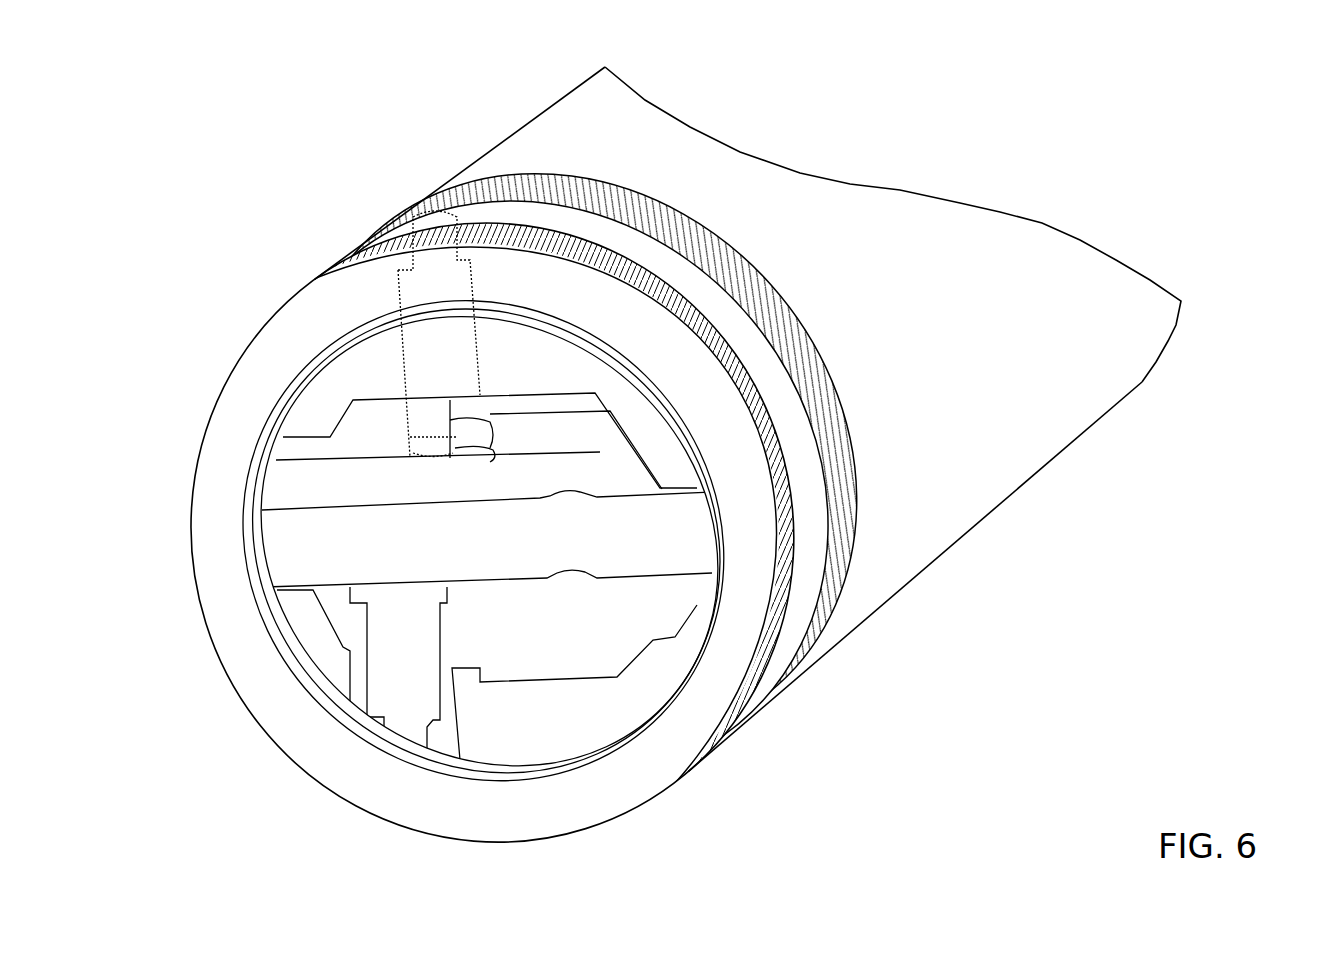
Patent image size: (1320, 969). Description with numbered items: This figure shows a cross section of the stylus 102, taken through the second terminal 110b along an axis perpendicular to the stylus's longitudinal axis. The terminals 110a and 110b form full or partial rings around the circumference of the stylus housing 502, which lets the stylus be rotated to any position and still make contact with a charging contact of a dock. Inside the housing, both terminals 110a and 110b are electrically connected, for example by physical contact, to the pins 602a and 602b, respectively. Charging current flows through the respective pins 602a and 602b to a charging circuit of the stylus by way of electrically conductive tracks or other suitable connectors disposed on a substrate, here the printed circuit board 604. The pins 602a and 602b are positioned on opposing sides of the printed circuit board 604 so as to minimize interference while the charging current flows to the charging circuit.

The stylus 102 is at (660, 484).
The terminal 110a is at (666, 203).
The terminal 110b is at (727, 378).
The stylus housing 502 is at (1046, 484).
The pin 602a is at (494, 432).
The pin 602b is at (440, 650).
The printed circuit board 604 is at (631, 578).